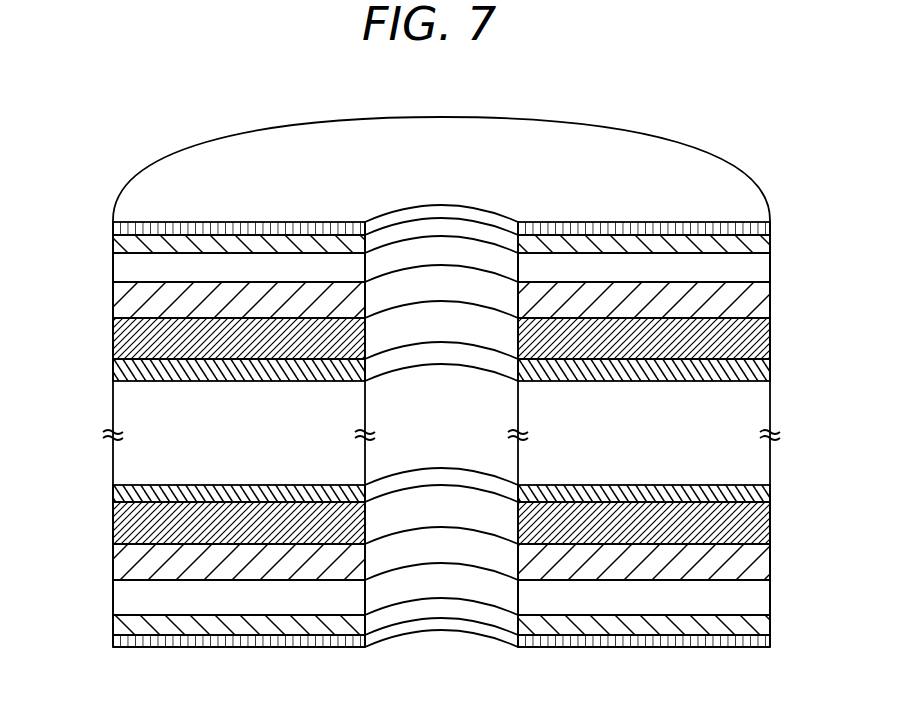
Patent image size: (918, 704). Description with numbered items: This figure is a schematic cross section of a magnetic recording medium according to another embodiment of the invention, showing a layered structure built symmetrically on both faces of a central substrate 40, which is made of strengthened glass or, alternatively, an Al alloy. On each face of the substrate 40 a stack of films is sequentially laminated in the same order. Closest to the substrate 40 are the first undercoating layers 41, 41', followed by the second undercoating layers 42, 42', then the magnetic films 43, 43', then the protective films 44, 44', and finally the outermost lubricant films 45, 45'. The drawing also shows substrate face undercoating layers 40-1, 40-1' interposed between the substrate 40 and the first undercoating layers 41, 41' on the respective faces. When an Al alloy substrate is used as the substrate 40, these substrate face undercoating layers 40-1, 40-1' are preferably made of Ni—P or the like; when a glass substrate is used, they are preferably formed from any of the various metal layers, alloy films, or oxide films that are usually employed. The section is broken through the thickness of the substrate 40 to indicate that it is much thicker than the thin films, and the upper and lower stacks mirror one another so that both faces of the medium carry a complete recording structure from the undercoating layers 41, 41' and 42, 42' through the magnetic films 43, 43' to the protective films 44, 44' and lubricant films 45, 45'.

The substrate 40 is at (755, 409).
The substrate face undercoating layer 40-1 is at (395, 362).
The substrate face undercoating layer 40-1' is at (394, 495).
The first undercoating layer 41 is at (482, 330).
The first undercoating layer 41' is at (486, 523).
The second undercoating layer 42 is at (482, 291).
The second undercoating layer 42' is at (486, 562).
The magnetic film 43 is at (482, 261).
The magnetic film 43' is at (486, 597).
The protective film 44 is at (482, 238).
The protective film 44' is at (486, 626).
The lubricant film 45 is at (482, 220).
The lubricant film 45' is at (486, 650).